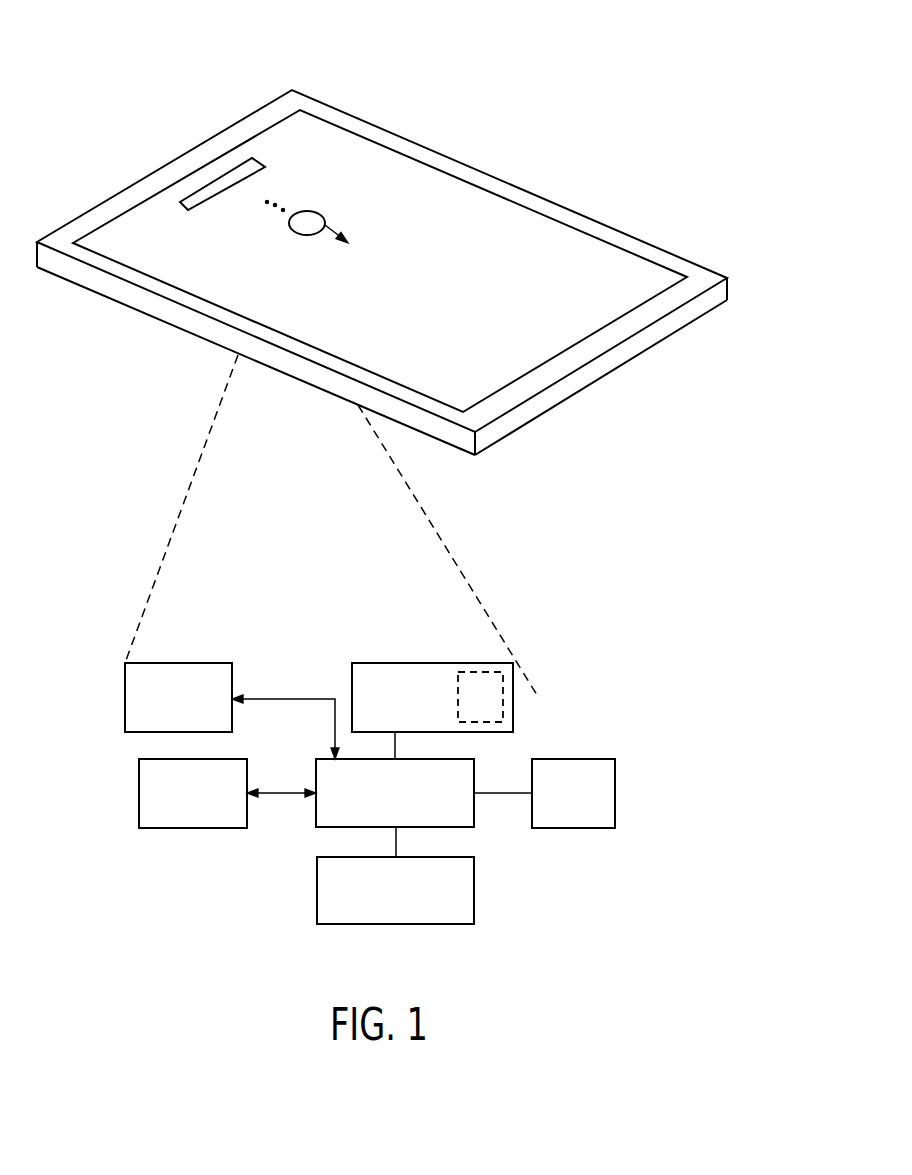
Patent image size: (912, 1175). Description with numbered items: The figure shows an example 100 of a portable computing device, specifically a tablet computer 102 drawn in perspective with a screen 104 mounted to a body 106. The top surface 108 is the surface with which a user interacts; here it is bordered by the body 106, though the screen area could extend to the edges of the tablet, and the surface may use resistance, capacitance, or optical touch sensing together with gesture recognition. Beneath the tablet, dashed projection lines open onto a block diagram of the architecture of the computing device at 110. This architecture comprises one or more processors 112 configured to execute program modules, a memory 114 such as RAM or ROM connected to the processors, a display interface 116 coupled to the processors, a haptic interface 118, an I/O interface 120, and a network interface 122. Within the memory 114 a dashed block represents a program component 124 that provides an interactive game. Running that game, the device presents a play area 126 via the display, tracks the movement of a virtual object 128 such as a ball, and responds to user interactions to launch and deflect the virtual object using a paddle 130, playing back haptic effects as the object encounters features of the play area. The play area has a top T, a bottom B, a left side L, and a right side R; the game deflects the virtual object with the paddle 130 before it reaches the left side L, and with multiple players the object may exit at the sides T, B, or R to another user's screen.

The example of a portable computing device 100 is at (520, 73).
The tablet computer 102 is at (677, 335).
The screen 104 is at (653, 262).
The body 106 is at (135, 198).
The top surface 108 is at (357, 152).
The architecture of the computing device 110 is at (317, 607).
The processors 112 is at (474, 817).
The memory 114 is at (427, 662).
The display interface 116 is at (232, 712).
The haptic interface 118 is at (247, 818).
The I/O interface 120 is at (615, 790).
The network interface 122 is at (474, 887).
The program component 124 is at (503, 698).
The play area 126 is at (625, 286).
The virtual object 128 is at (307, 212).
The paddle 130 is at (185, 208).
The left side L is at (138, 208).
The top T is at (453, 177).
The right side R is at (548, 357).
The bottom B is at (345, 360).